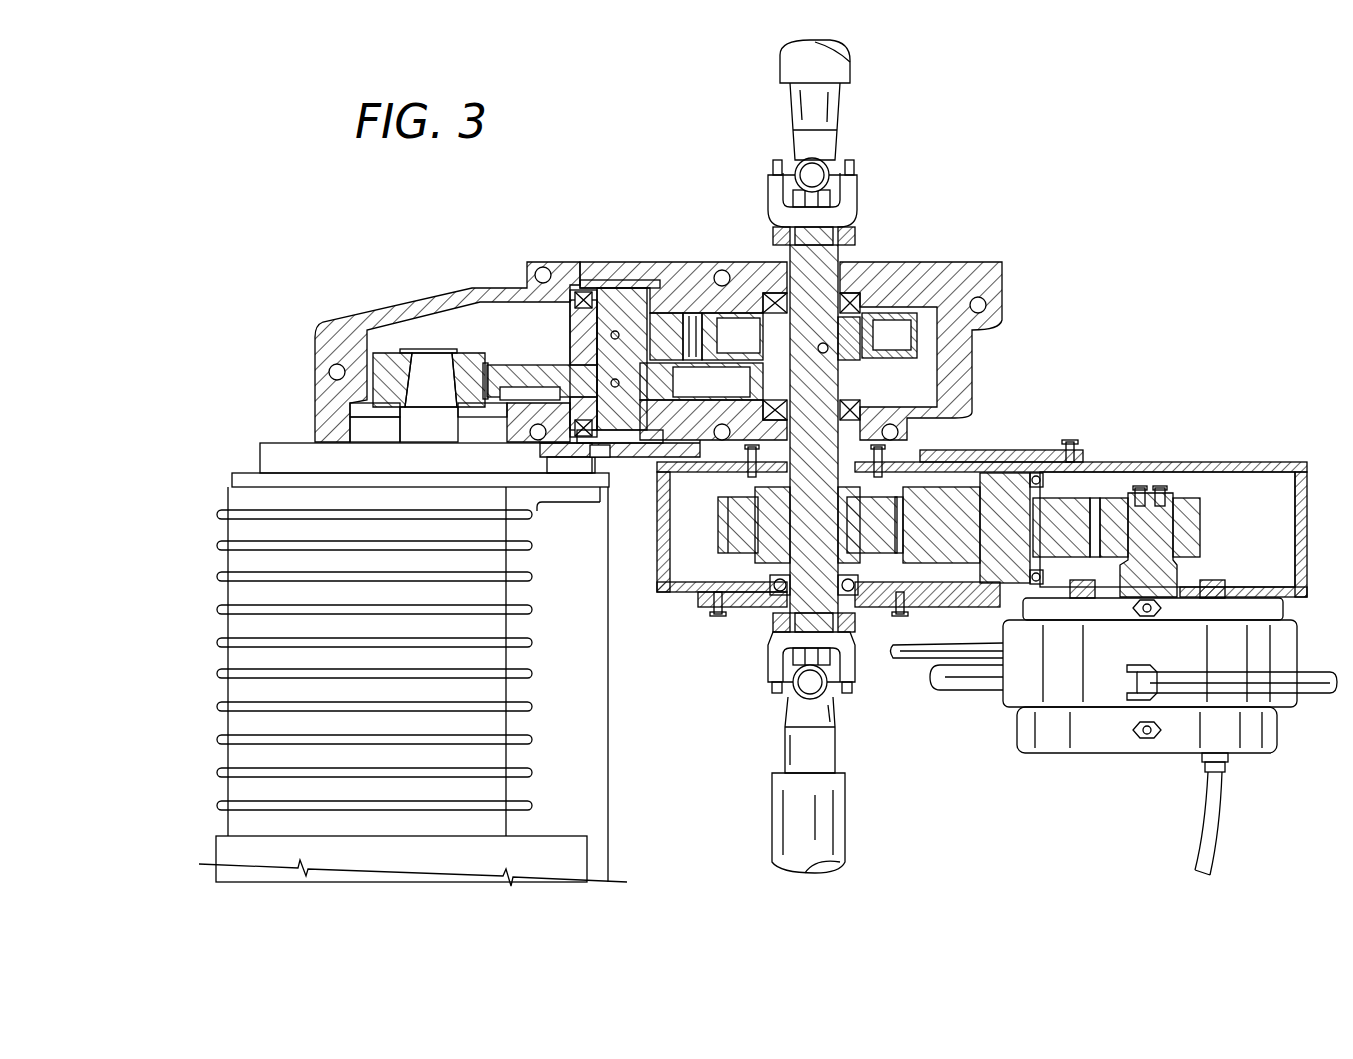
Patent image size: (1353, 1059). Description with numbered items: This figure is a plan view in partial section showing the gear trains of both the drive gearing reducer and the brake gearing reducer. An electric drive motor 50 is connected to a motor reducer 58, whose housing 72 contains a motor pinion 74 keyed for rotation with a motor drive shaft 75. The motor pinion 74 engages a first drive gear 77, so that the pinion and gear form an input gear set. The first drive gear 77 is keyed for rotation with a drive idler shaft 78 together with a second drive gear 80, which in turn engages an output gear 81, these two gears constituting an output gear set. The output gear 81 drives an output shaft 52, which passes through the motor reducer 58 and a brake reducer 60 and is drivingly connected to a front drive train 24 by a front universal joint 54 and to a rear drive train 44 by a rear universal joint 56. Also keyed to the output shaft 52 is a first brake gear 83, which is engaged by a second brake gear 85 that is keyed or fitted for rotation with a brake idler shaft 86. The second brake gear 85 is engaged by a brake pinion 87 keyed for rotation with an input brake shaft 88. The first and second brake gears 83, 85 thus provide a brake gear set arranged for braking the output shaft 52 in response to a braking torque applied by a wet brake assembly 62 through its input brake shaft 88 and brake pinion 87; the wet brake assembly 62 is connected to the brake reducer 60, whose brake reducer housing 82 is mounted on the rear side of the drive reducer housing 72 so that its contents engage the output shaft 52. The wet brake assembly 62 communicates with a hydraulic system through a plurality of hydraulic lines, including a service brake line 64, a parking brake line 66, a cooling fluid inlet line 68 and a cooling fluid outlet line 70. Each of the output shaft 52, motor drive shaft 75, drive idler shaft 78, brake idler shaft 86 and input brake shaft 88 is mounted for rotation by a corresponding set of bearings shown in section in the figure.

The front drive train 24 is at (883, 92).
The rear drive train 44 is at (870, 831).
The electric drive motor 50 is at (550, 777).
The output shaft 52 is at (843, 256).
The front universal joint 54 is at (858, 190).
The rear universal joint 56 is at (767, 657).
The motor reducer 58 is at (607, 357).
The brake reducer 60 is at (989, 485).
The wet brake assembly 62 is at (1132, 764).
The service brake line 64 is at (1226, 812).
The parking brake line 66 is at (905, 660).
The cooling fluid inlet line 68 is at (958, 684).
The cooling fluid outlet line 70 is at (1323, 694).
The housing 72 is at (390, 306).
The motor pinion 74 is at (470, 358).
The motor drive shaft 75 is at (430, 380).
The first drive gear 77 is at (512, 367).
The drive idler shaft 78 is at (620, 290).
The second drive gear 80 is at (542, 326).
The output gear 81 is at (702, 312).
The brake reducer housing 82 is at (1276, 463).
The first brake gear 83 is at (717, 530).
The second brake gear 85 is at (948, 478).
The brake idler shaft 86 is at (1000, 490).
The brake pinion 87 is at (1195, 500).
The input brake shaft 88 is at (1175, 583).